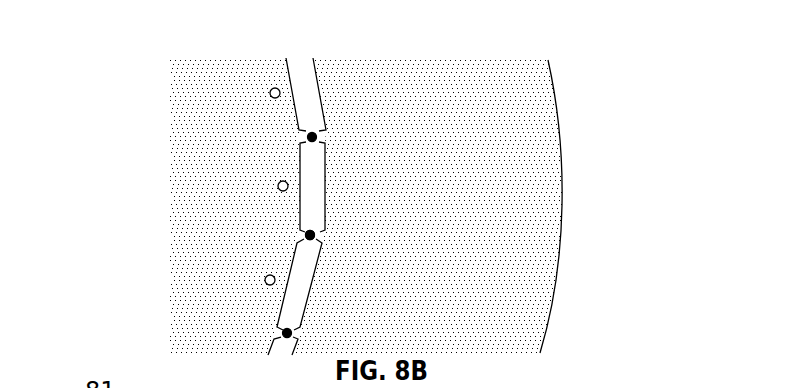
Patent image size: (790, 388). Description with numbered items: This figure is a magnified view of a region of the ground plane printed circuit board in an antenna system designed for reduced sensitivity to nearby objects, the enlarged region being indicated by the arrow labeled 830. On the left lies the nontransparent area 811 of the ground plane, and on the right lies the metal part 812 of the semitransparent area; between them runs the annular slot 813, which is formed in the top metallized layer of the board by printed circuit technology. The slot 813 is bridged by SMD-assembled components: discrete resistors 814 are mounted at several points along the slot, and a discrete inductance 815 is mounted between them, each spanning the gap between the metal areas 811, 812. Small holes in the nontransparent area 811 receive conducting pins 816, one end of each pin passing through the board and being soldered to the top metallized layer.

The nontransparent area of ground plane 811 is at (225, 93).
The metal part of the semitransparent area of ground plane 812 is at (540, 92).
The annular slot of the semitransparent area of ground plane 813 is at (302, 72).
The discrete resistors 814 is at (291, 331).
The discrete inductance 815 is at (305, 235).
The conducting pin 816 is at (277, 185).
The hinge assembly 830 is at (515, 53).